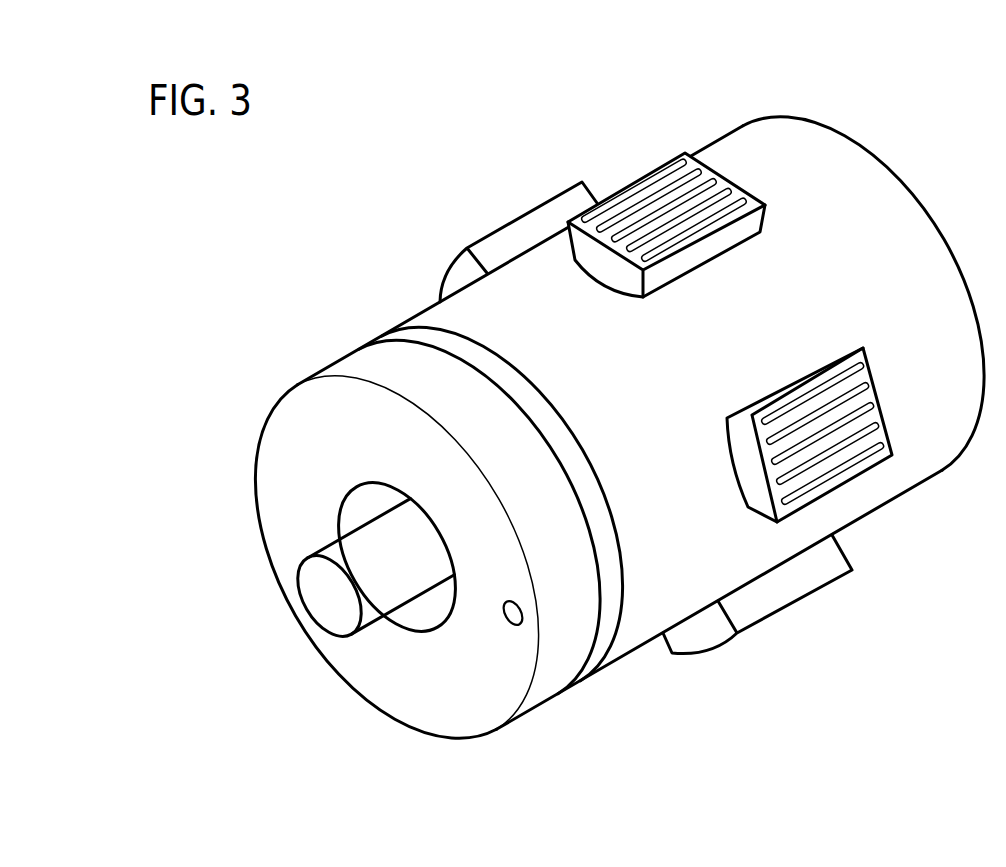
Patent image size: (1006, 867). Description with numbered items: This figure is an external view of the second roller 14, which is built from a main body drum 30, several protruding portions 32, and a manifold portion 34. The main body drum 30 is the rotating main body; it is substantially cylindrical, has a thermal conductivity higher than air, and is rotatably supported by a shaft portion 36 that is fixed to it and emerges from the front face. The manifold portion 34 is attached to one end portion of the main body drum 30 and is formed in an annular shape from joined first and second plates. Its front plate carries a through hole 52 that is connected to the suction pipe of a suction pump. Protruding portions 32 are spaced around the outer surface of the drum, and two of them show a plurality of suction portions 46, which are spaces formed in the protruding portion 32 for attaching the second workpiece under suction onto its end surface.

The second roller 14 is at (288, 228).
The main body drum 30 is at (933, 452).
The protruding portion 32 is at (520, 237).
The manifold portion 34 is at (322, 357).
The shaft portion 36 is at (318, 607).
The suction portion 46 is at (721, 214).
The through hole 52 is at (508, 622).